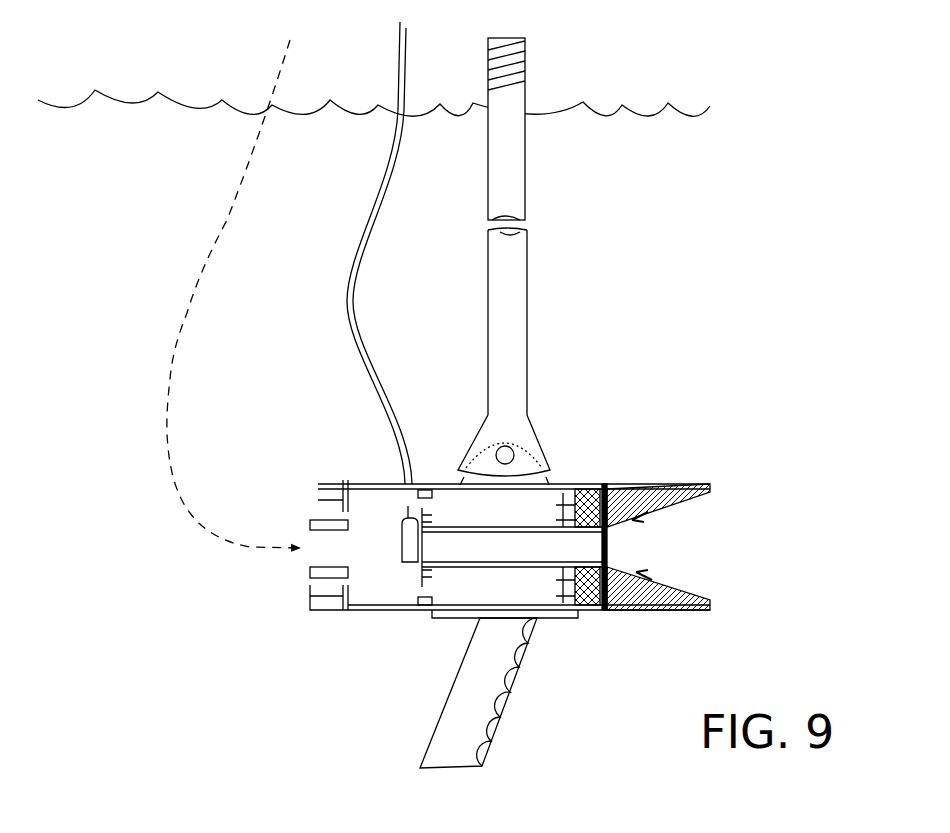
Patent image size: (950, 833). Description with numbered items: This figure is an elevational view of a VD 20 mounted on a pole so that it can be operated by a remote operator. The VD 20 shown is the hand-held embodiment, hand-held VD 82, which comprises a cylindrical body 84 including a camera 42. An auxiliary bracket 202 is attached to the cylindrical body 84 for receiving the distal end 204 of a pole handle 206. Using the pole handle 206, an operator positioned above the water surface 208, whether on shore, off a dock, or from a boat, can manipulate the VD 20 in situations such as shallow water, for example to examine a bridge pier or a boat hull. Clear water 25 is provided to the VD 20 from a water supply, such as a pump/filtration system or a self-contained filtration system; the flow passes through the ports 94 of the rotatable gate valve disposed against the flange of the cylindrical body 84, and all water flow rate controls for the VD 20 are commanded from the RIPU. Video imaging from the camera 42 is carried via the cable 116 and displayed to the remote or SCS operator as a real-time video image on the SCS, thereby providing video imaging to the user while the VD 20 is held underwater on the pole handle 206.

The water surface 208 is at (129, 98).
The pole handle 206 is at (527, 66).
The distal end of pole handle 204 is at (526, 313).
The auxiliary bracket 202 is at (553, 478).
The cable 116 is at (358, 300).
The ports 94 is at (190, 302).
The cylindrical body 84 is at (440, 482).
The VD 20 is at (684, 470).
The clear water 25 is at (336, 545).
The camera 42 is at (448, 546).
The hand-held VD 82 is at (540, 668).